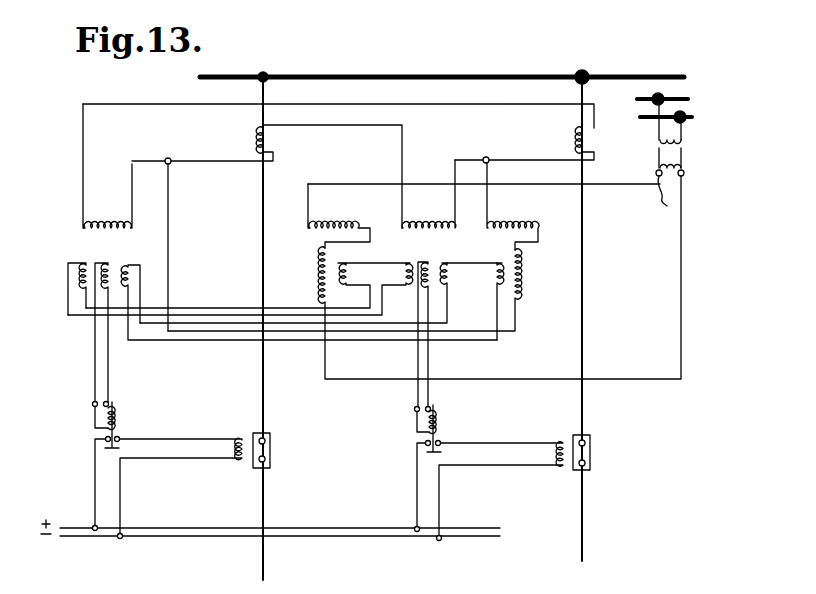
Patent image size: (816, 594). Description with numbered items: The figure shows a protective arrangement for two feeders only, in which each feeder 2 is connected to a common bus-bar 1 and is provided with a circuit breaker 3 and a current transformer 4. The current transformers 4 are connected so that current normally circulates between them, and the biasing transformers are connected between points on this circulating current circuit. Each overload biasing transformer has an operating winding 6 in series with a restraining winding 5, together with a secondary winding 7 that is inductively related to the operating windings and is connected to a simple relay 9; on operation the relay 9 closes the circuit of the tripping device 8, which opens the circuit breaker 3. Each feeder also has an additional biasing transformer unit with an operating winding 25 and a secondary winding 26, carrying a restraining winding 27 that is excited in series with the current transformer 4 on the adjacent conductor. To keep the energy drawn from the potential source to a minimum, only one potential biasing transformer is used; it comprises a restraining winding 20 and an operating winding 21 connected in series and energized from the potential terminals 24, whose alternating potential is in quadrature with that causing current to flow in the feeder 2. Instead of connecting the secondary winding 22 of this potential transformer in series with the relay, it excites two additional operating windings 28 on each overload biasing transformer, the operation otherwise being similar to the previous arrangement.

The bus-bar 1 is at (342, 76).
The feeder 2 is at (264, 258).
The circuit breaker 3 is at (271, 459).
The current transformer 4 is at (268, 143).
The restraining winding 5 is at (527, 223).
The operating winding 6 is at (522, 276).
The secondary winding 7 is at (492, 276).
The tripping device 8 is at (236, 444).
The relay 9 is at (120, 421).
The restraining winding 20 is at (339, 216).
The operating winding 21 is at (320, 281).
The secondary winding 22 is at (351, 272).
The potential terminals 24 is at (664, 153).
The operating winding 25 is at (135, 270).
The secondary winding 26 is at (110, 262).
The restraining winding 27 is at (116, 221).
The additional operating winding 28 is at (87, 262).